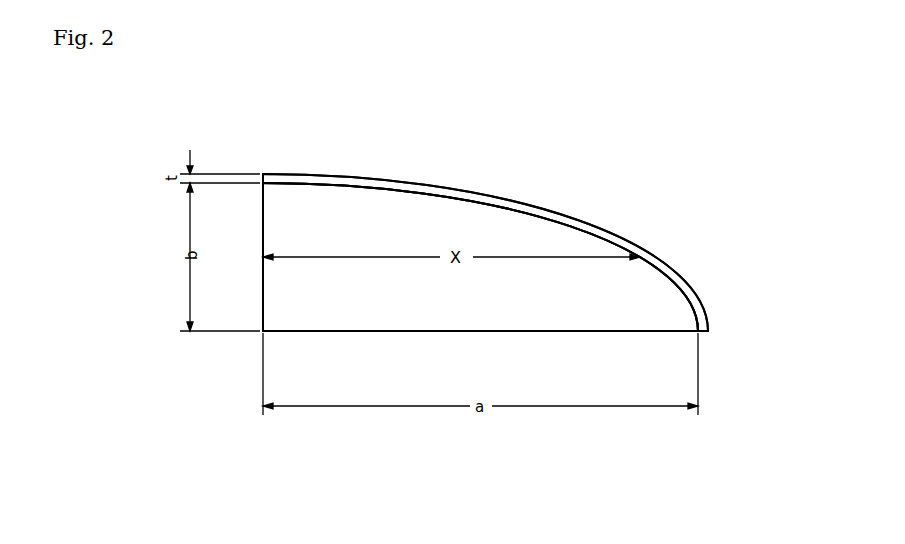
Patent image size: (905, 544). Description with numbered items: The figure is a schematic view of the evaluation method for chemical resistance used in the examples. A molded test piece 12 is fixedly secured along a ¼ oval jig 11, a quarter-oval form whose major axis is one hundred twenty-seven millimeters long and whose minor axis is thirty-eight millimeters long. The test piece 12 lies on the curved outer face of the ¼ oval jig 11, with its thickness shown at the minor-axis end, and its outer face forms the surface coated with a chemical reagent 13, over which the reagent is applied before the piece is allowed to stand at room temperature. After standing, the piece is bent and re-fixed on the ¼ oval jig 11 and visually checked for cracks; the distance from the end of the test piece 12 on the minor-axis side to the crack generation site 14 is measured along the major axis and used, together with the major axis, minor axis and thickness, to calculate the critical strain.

The ¼ oval jig 11 is at (320, 322).
The test piece 12 is at (550, 220).
The surface coated with a chemical reagent 13 is at (427, 187).
The crack generation site 14 is at (644, 251).